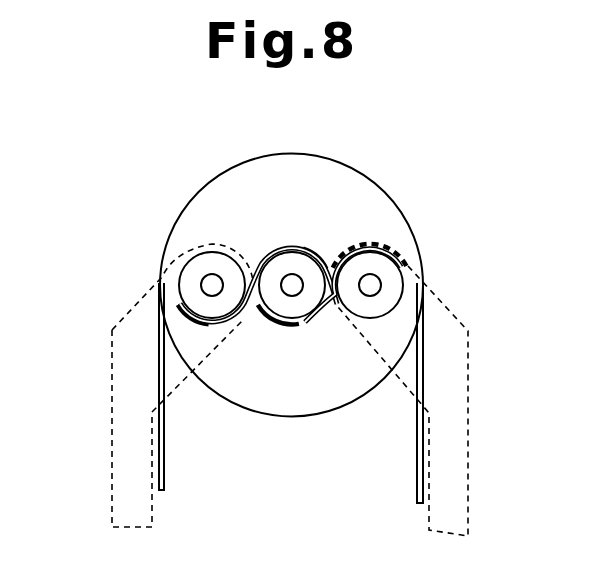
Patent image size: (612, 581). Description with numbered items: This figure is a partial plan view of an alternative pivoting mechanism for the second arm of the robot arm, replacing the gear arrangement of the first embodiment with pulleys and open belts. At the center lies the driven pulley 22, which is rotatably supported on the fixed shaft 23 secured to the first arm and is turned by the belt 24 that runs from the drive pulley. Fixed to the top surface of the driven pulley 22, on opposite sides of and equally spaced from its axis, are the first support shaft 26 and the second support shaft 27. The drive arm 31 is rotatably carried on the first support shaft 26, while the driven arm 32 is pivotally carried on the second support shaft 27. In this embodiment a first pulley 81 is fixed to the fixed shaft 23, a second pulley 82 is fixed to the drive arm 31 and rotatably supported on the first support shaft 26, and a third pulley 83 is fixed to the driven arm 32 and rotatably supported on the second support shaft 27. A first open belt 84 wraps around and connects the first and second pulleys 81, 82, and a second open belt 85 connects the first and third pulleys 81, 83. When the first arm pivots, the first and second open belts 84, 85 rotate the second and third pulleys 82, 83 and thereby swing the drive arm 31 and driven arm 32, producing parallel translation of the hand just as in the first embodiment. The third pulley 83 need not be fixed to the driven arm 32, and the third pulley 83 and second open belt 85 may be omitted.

The driven pulley 22 is at (338, 163).
The fixed shaft 23 is at (294, 296).
The belt 24 is at (417, 470).
The first support shaft 26 is at (218, 294).
The second support shaft 27 is at (370, 296).
The drive arm 31 is at (112, 463).
The driven arm 32 is at (469, 455).
The first pulley 81 is at (300, 258).
The second pulley 82 is at (226, 257).
The third pulley 83 is at (373, 258).
The first open belt 84 is at (275, 248).
The second open belt 85 is at (270, 322).